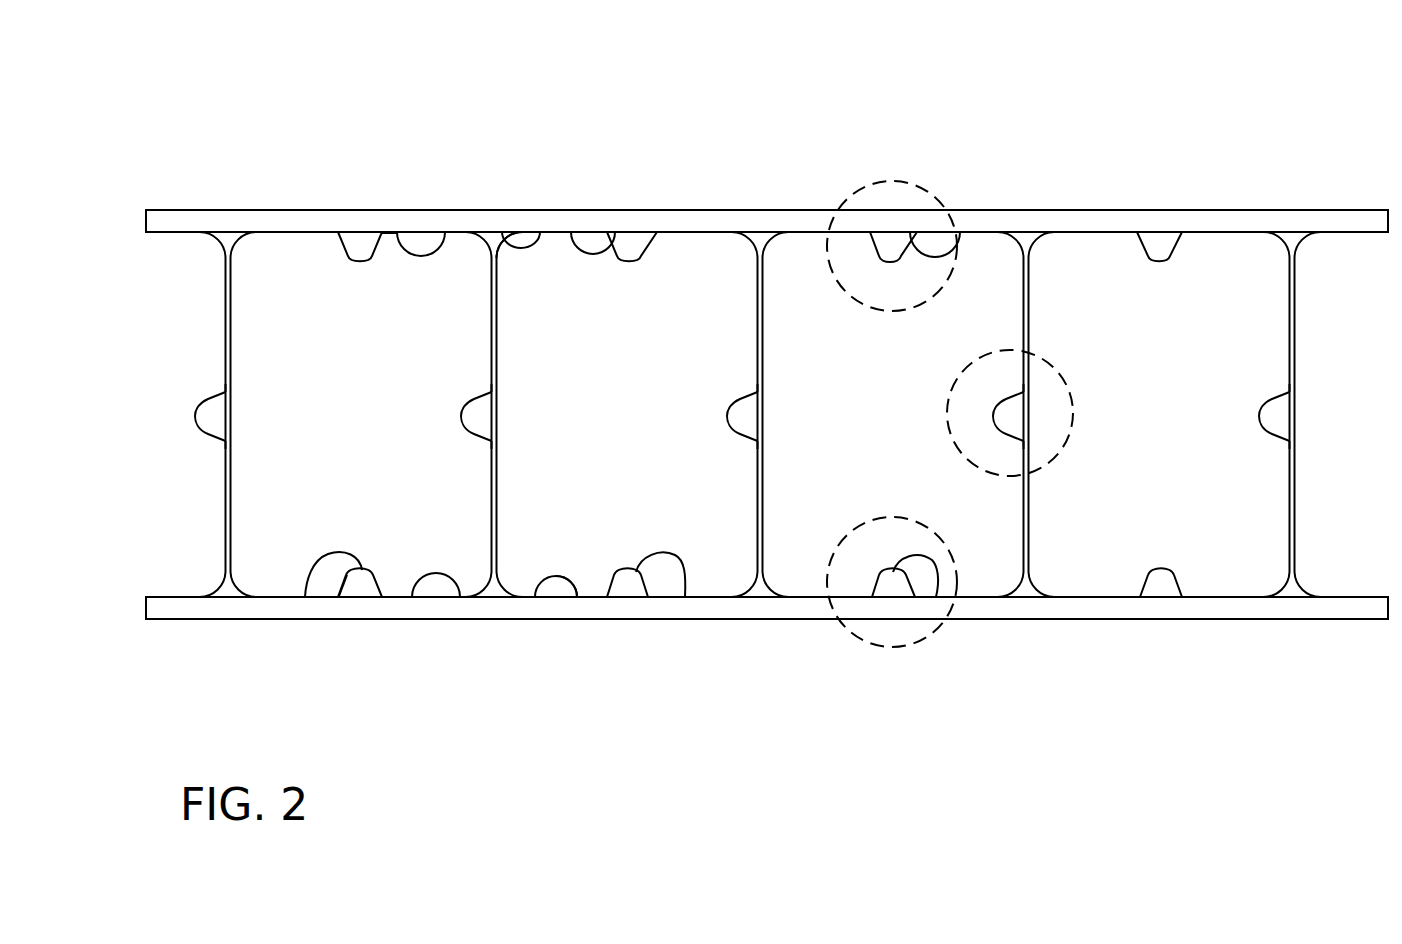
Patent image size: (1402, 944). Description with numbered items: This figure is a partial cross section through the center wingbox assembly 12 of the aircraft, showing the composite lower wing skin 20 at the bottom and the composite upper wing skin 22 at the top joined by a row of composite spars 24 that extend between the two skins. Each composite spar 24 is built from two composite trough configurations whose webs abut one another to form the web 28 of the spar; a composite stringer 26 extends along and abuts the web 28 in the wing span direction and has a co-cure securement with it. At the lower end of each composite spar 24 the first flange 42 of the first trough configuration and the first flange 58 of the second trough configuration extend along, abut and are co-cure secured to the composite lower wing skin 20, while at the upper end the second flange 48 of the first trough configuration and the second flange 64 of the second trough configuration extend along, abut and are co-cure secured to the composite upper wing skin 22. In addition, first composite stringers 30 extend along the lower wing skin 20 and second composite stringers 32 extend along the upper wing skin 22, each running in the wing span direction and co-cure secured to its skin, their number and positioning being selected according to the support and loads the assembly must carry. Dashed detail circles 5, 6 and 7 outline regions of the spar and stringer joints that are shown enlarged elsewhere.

The center wingbox assembly 12 is at (950, 120).
The composite lower wing skin 20 is at (477, 608).
The composite upper wing skin 22 is at (713, 210).
The composite spar 24 is at (482, 318).
The composite stringer 26 is at (462, 413).
The web 28 is at (478, 358).
The first composite stringer 30 is at (310, 578).
The second composite stringer 32 is at (355, 262).
The first flange 42 is at (414, 576).
The second flange 48 is at (397, 232).
The first flange 58 is at (578, 597).
The second flange 64 is at (497, 240).
The detail circle FIG. 5 is at (1073, 400).
The detail circle FIG. 6 is at (928, 530).
The detail circle FIG. 7 is at (878, 186).